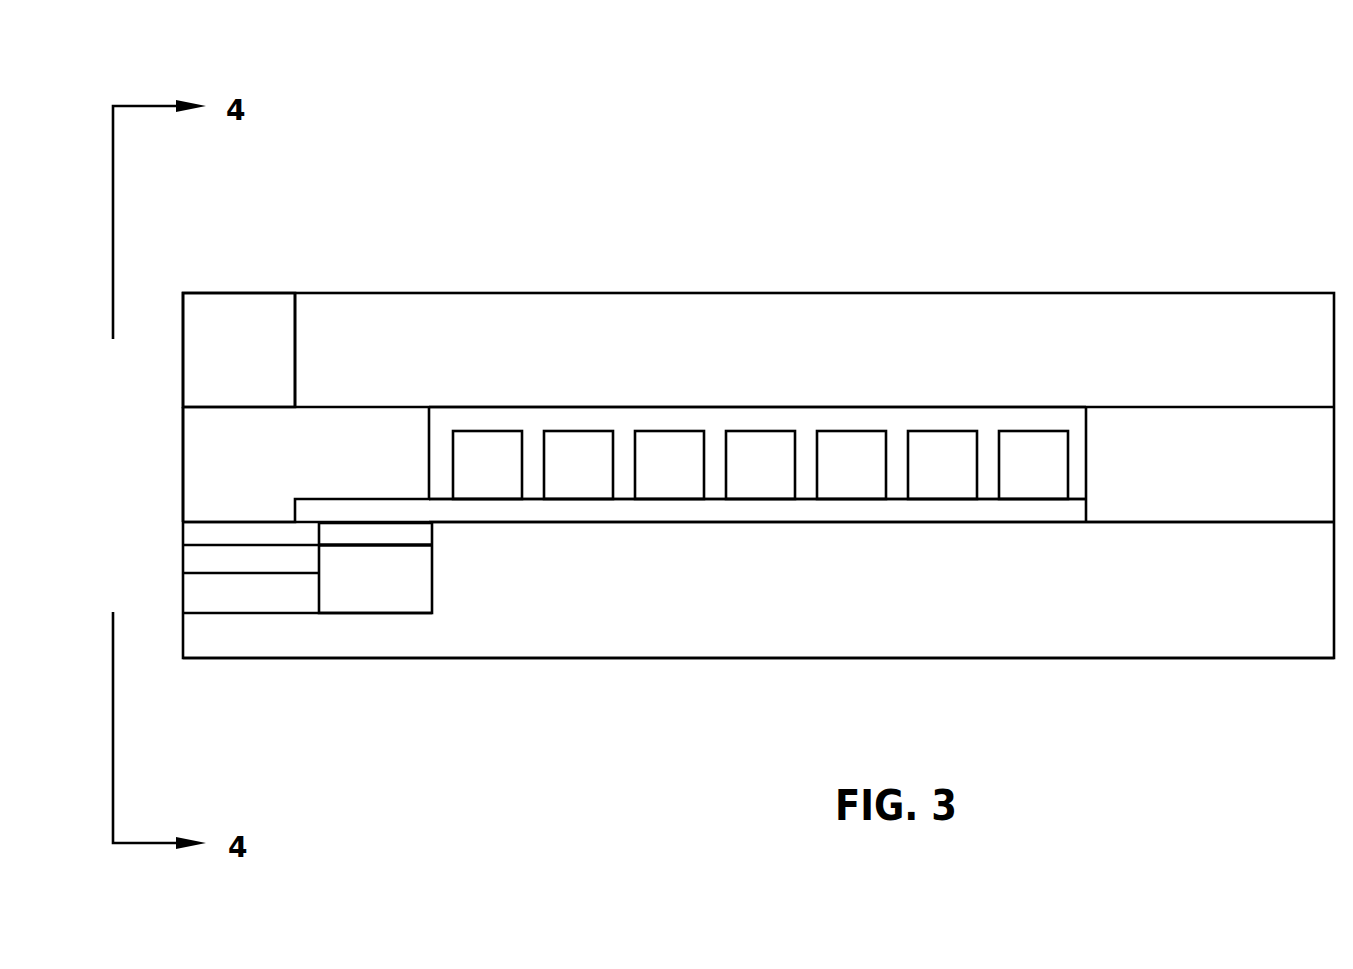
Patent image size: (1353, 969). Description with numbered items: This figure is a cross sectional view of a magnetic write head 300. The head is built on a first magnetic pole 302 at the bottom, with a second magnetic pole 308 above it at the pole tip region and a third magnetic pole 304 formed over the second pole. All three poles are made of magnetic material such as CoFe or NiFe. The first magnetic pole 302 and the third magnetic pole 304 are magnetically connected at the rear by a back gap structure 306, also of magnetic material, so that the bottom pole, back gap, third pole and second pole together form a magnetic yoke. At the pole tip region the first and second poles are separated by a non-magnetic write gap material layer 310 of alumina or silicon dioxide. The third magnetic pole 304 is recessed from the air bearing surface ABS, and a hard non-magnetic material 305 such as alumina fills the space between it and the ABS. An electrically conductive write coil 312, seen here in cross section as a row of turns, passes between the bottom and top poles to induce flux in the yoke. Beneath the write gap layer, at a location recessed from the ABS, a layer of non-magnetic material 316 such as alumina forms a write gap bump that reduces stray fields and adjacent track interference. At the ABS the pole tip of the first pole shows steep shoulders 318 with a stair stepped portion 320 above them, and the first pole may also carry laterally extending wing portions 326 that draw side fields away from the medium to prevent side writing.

The magnetic write head 300 is at (846, 206).
The first magnetic pole 302 is at (725, 590).
The third magnetic pole 304 is at (459, 351).
The hard non-magnetic material 305 is at (273, 355).
The back gap structure 306 is at (1165, 462).
The second magnetic pole 308 is at (320, 458).
The write gap material layer 310 is at (854, 511).
The write coil 312 is at (662, 430).
The layer of non-magnetic material 316 is at (898, 418).
The steep shoulders 318 is at (201, 596).
The stair stepped portion 320 is at (198, 560).
The laterally extending wing portions 326 is at (407, 578).
The air bearing surface ABS is at (183, 424).